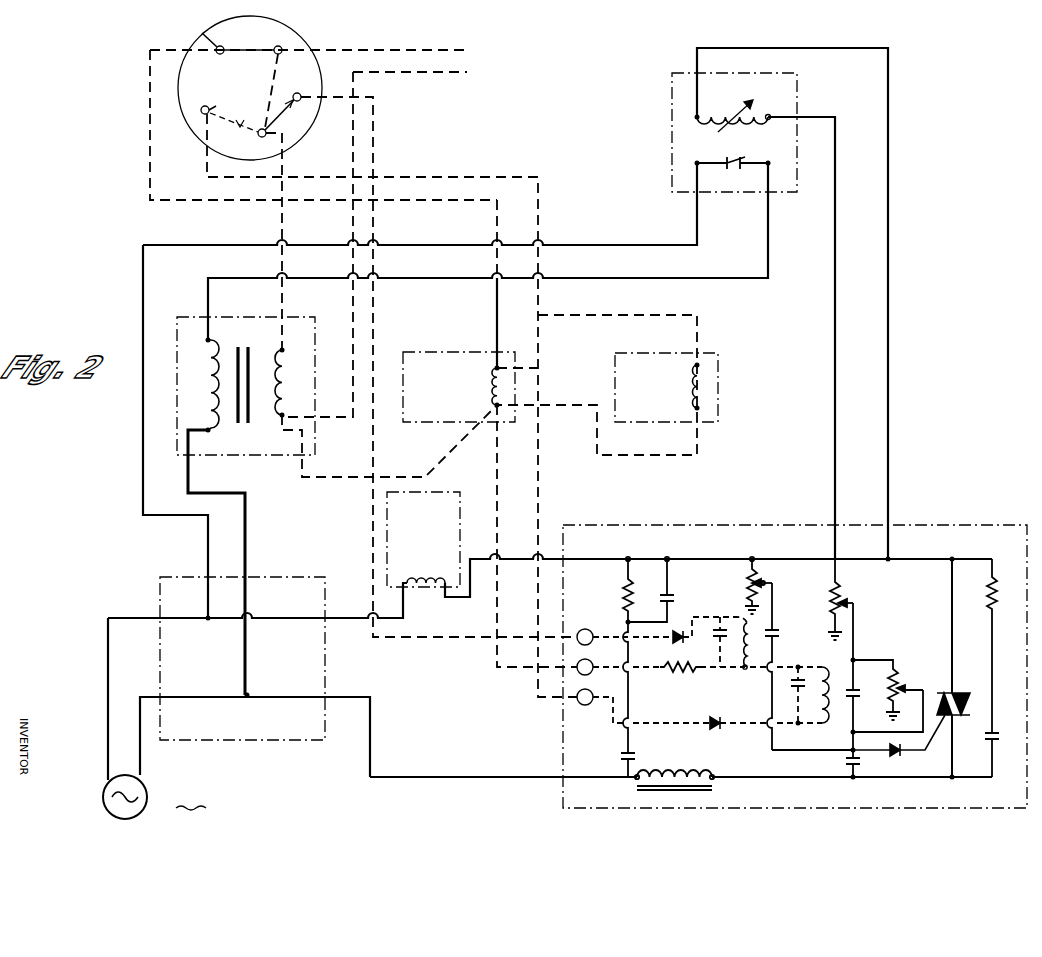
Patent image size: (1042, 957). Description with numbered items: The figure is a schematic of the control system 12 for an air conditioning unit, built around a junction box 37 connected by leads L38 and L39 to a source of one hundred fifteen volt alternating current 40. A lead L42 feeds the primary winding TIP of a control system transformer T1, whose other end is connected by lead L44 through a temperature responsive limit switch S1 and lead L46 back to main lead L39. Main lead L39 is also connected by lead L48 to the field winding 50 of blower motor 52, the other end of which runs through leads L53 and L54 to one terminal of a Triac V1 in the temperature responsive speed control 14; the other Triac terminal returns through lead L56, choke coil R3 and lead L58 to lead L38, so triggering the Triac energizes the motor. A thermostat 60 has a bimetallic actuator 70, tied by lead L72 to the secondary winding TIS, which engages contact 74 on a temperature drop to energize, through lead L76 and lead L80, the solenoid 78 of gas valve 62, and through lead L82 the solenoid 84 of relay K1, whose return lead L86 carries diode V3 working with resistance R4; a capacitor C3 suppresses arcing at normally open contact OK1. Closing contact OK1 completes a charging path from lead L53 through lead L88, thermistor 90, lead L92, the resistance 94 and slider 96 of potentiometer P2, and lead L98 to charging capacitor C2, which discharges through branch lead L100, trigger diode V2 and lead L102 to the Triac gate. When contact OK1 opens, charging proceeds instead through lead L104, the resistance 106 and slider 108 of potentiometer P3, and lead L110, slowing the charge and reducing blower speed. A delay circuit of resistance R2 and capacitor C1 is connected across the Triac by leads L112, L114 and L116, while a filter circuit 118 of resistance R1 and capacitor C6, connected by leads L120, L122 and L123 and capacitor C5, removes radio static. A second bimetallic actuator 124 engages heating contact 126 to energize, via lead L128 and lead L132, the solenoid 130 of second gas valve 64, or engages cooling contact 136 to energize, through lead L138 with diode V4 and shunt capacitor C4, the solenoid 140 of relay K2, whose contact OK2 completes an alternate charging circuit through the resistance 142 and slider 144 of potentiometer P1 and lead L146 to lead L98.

The control system 12 is at (86, 181).
The temperature responsive speed control 14 is at (600, 525).
The junction box 37 is at (160, 599).
The source of 115 volt alternating current 40 is at (103, 785).
The field winding 50 is at (410, 590).
The motor 52 is at (401, 551).
The thermostat 60 is at (223, 88).
The gas valve 62 is at (445, 387).
The second gas valve 64 is at (662, 387).
The bimetallic actuator 70 is at (266, 47).
The contact 74 is at (202, 36).
The solenoid of gas valve 78 is at (492, 373).
The solenoid of relay K1 84 is at (827, 705).
The thermistor 90 is at (700, 108).
The resistance of potentiometer P2 94 is at (834, 586).
The slider of potentiometer P2 96 is at (845, 600).
The resistance of potentiometer P3 106 is at (896, 668).
The potentiometer slider 108 is at (910, 684).
The filter circuit 118 is at (619, 628).
The second bimetallic actuator 124 is at (246, 113).
The heating contact 126 is at (203, 108).
The solenoid of the second gas valve 130 is at (706, 388).
The third contact 136 is at (301, 104).
The solenoid of relay K2 140 is at (745, 620).
The resistance of potentiometer P1 142 is at (750, 572).
The potentiometer slider 144 is at (772, 572).
The lead L38 is at (140, 762).
The lead L39 is at (108, 684).
The lead L42 is at (247, 533).
The lead L44 is at (442, 285).
The lead L46 is at (628, 244).
The lead L48 is at (304, 617).
The lead L53 is at (800, 558).
The lead L54 is at (951, 593).
The lead L56 is at (748, 779).
The lead L58 is at (477, 785).
The lead L72 is at (279, 86).
The lead L76 is at (150, 142).
The lead L80 is at (448, 447).
The lead L82 is at (498, 476).
The lead L86 is at (680, 723).
The lead L88 is at (888, 315).
The lead L92 is at (835, 340).
The lead L98 is at (854, 630).
The branch lead L100 is at (872, 752).
The lead L102 is at (937, 733).
The lead L104 is at (862, 659).
The lead L110 is at (852, 750).
The lead L112 is at (986, 558).
The lead L114 is at (992, 628).
The lead L116 is at (955, 779).
The lead L120 is at (624, 571).
The lead L122 is at (667, 586).
The lead L123 is at (630, 647).
The lead L128 is at (441, 176).
The lead L132 is at (662, 462).
The lead L138 is at (374, 134).
The lead L146 is at (773, 608).
The control system transformer T1 is at (246, 386).
The primary winding TIP is at (210, 381).
The secondary winding TIS is at (287, 387).
The temperature responsive limit switch S1 is at (732, 158).
The resistance R1 is at (616, 589).
The resistance R2 is at (1001, 586).
The choke coil R3 is at (674, 770).
The resistance R4 is at (680, 678).
The capacitor C1 is at (993, 737).
The charging capacitor C2 is at (843, 763).
The capacitor C3 is at (789, 690).
The capacitor C4 is at (719, 638).
The capacitor C5 is at (612, 758).
The capacitor C6 is at (670, 603).
The gate-controlled solid state electronic switch V1 is at (954, 697).
The trigger diode V2 is at (899, 744).
The diode V3 is at (715, 734).
The diode V4 is at (664, 632).
The relay K1 is at (829, 684).
The relay K2 is at (756, 645).
The normally open contact of relay K1 OK1 is at (867, 692).
The normally open contact of relay K2 OK2 is at (786, 637).
The potentiometer P1 is at (772, 587).
The potentiometer P2 is at (856, 604).
The potentiometer P3 is at (907, 703).